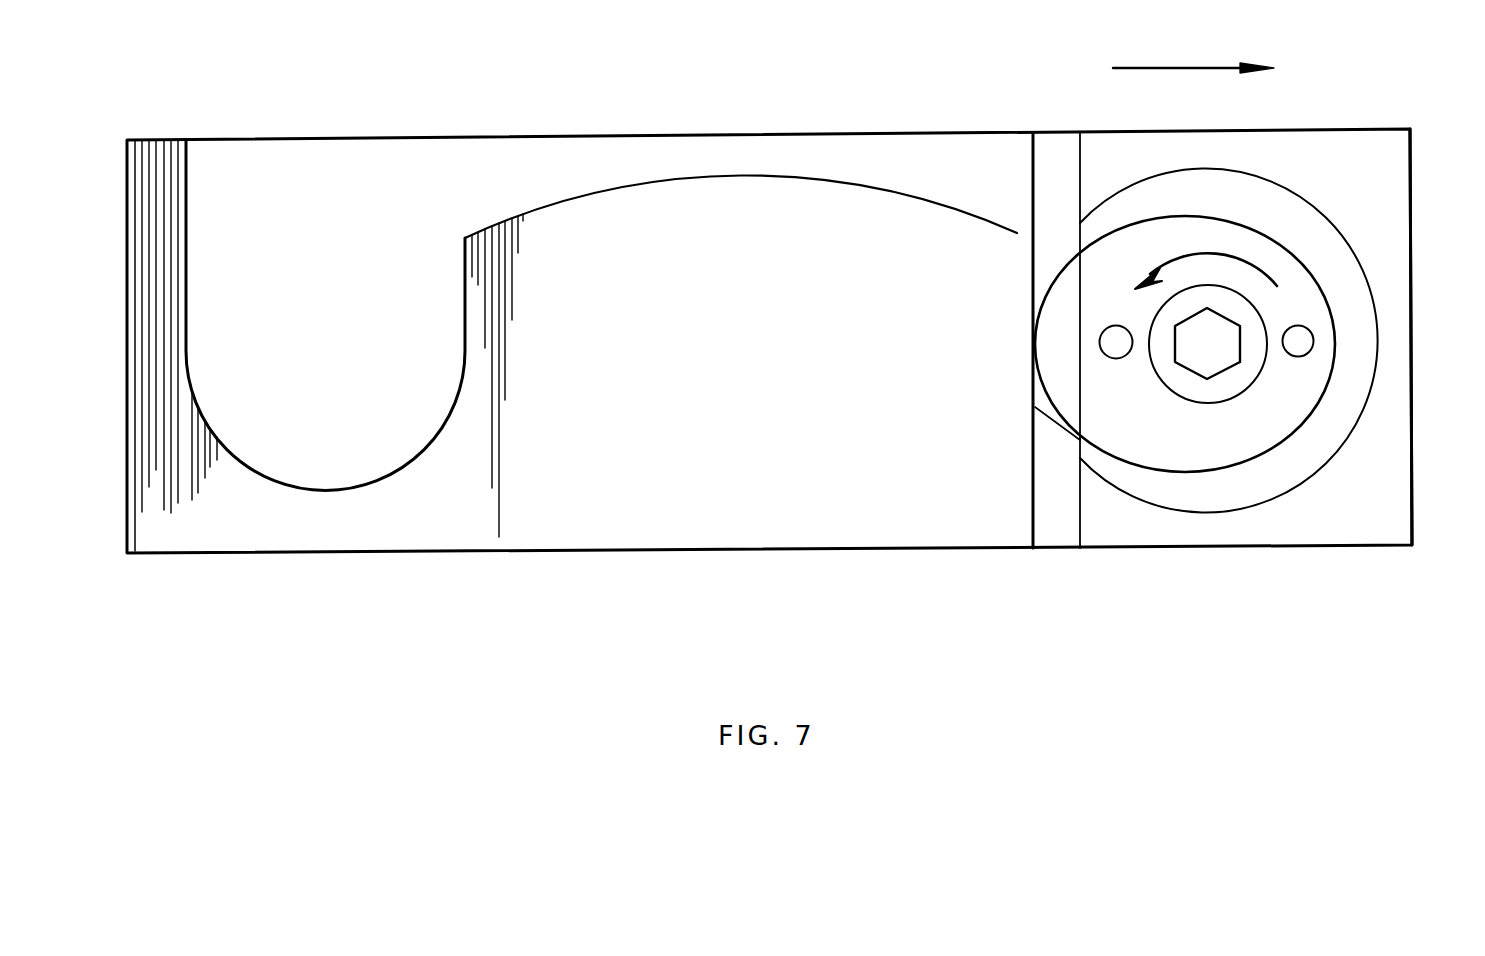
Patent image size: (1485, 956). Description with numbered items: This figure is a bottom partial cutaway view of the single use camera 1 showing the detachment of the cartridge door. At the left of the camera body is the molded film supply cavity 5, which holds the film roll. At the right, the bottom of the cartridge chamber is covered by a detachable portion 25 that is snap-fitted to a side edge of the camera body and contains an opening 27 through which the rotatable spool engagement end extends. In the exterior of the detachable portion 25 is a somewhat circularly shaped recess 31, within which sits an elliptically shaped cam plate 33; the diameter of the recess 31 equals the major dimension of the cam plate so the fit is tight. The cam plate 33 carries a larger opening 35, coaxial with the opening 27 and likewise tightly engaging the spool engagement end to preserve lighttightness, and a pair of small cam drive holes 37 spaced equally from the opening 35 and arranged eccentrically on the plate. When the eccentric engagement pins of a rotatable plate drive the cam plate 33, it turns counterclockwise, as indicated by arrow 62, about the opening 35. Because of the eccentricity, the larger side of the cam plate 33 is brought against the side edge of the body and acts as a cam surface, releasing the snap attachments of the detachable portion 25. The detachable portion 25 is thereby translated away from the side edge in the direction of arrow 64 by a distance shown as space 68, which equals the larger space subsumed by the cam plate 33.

The single use camera 1 is at (697, 527).
The film supply cavity 5 is at (350, 300).
The detachable portion 25 is at (1378, 138).
The opening 27 is at (1035, 145).
The circular recess 31 is at (1178, 193).
The cam plate 33 is at (1312, 304).
The larger opening 35 is at (1215, 352).
The cam drive holes 37 is at (1116, 346).
The arrow 62 is at (1250, 258).
The arrow 64 is at (1168, 68).
The space 68 is at (1060, 515).